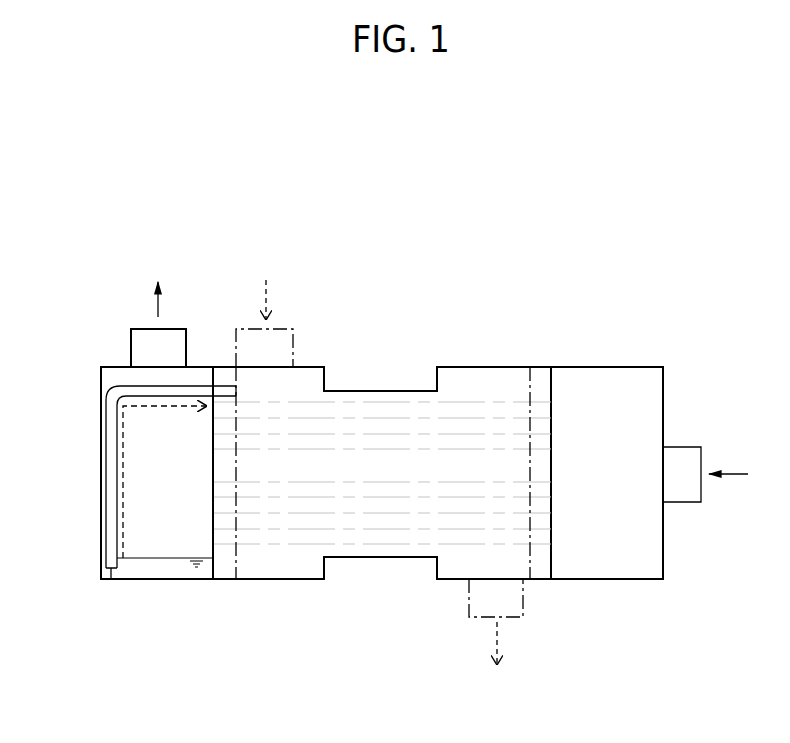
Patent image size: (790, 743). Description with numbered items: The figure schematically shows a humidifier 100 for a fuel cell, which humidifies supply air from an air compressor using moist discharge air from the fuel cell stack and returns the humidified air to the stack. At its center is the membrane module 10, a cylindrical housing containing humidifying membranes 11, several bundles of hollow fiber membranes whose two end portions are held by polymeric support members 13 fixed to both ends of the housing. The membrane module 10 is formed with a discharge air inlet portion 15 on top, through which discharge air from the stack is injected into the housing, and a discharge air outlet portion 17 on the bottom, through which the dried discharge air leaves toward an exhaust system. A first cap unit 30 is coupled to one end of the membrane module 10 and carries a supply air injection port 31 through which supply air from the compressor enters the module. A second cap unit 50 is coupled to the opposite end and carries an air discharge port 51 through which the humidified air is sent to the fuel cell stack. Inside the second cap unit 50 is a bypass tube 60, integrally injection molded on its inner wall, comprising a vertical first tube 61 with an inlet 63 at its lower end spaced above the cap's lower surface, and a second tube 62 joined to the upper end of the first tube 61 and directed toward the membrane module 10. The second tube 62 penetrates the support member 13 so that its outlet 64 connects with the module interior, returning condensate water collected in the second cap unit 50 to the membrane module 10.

The humidifier for a fuel cell 100 is at (399, 205).
The membrane module 10 is at (380, 572).
The humidifying membranes 11 is at (304, 513).
The support members 13 is at (236, 553).
The discharge air inlet portion 15 is at (293, 337).
The discharge air outlet portion 17 is at (475, 617).
The first cap unit 30 is at (613, 584).
The supply air injection port 31 is at (688, 447).
The second cap unit 50 is at (143, 583).
The air discharge port 51 is at (131, 340).
The bypass tube 60 is at (103, 432).
The first tube 61 is at (106, 492).
The second tube 62 is at (140, 386).
The inlet 63 is at (110, 579).
The outlet 64 is at (237, 390).